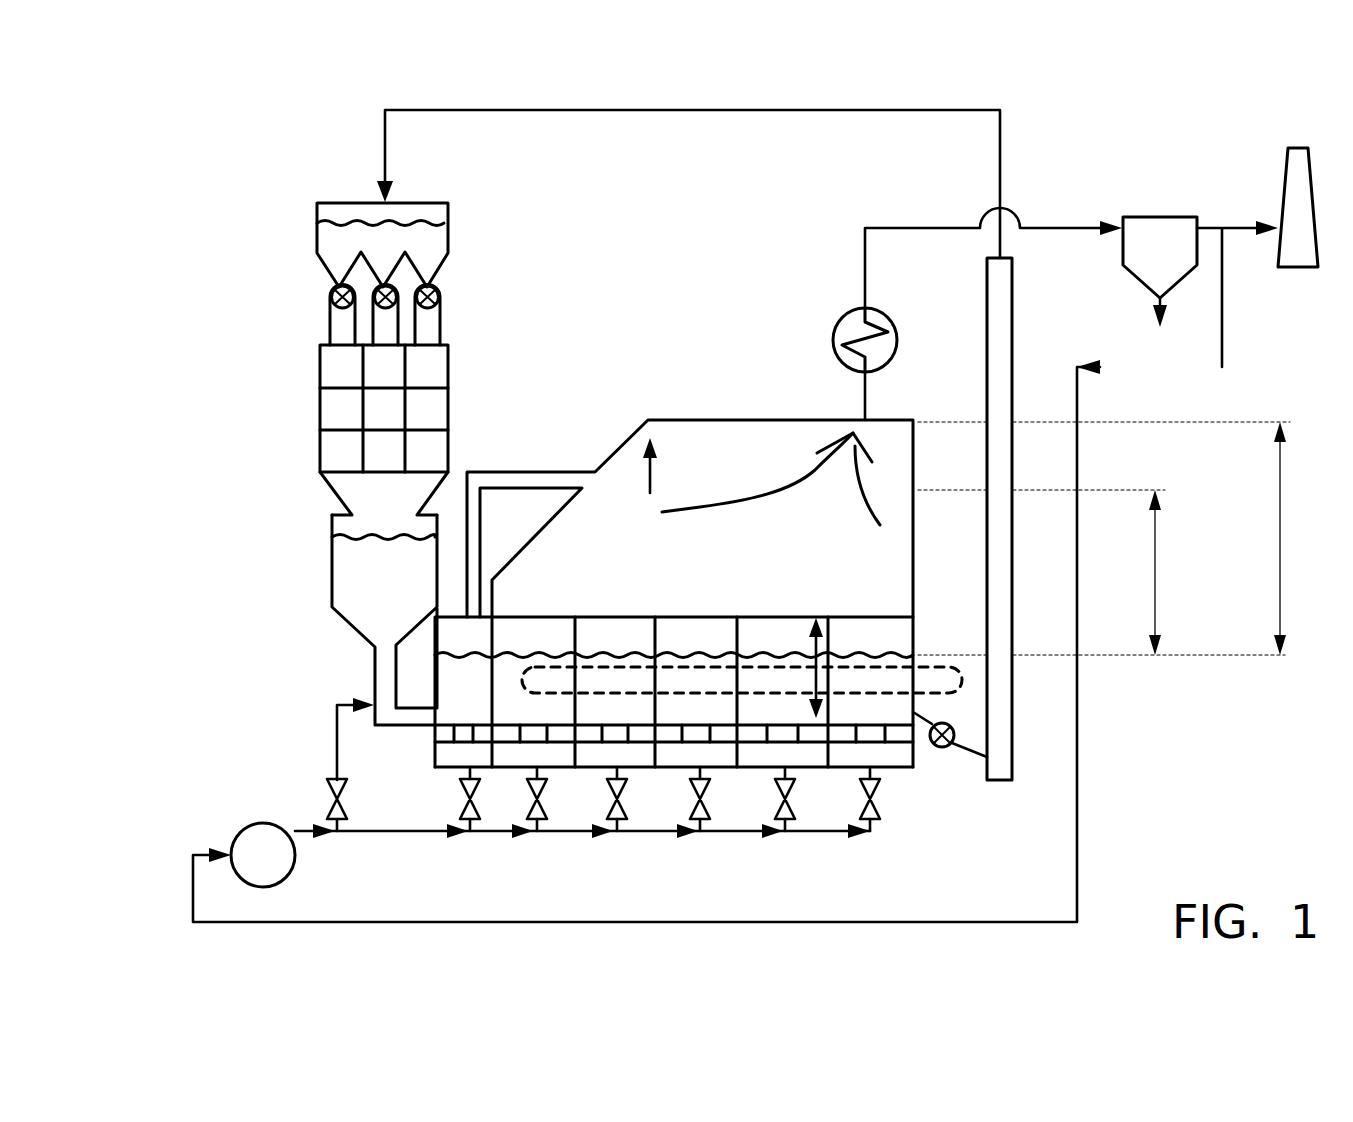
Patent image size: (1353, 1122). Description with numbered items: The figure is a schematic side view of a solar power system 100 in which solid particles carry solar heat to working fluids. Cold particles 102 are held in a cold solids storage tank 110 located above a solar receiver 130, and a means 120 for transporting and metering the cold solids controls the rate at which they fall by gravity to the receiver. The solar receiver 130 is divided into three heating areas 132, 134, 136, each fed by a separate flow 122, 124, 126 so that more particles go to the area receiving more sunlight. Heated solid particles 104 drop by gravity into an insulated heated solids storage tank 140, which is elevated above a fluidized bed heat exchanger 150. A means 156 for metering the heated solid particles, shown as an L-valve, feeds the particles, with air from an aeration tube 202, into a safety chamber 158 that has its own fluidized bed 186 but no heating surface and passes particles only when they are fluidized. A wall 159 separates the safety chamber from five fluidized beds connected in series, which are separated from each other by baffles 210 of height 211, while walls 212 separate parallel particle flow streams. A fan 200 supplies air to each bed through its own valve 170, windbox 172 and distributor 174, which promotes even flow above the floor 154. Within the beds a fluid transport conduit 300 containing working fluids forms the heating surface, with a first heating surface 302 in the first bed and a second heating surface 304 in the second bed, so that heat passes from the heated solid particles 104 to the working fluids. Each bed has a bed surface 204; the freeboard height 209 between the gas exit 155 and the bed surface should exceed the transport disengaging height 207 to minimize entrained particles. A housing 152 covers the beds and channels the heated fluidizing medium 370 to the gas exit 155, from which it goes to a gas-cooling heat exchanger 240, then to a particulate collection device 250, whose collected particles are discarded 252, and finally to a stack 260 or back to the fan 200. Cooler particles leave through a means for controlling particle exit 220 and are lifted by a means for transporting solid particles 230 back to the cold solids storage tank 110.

The solar power system 100 is at (308, 87).
The cold particles 102 is at (342, 253).
The heated solid particles 104 is at (355, 585).
The cold solids storage tank 110 is at (367, 201).
The means for transporting and metering the cold solids 120 is at (330, 298).
The flow 122 is at (343, 337).
The flow 124 is at (385, 323).
The flow 126 is at (427, 328).
The solar receiver 130 is at (323, 375).
The heating area 132 is at (340, 413).
The heating area 134 is at (377, 453).
The heating area 136 is at (427, 412).
The heated solids storage tank 140 is at (337, 515).
The fluidized bed heat exchanger 150 is at (620, 443).
The housing 152 is at (700, 420).
The floor 154 is at (873, 755).
The gas exit 155 is at (830, 403).
The means for metering the heated solid particles 156 is at (387, 680).
The safety chamber 158 is at (458, 633).
The wall 159 is at (495, 640).
The valve 170 is at (612, 801).
The windbox 172 is at (897, 750).
The distributor 174 is at (693, 732).
The fluidized bed 186 is at (467, 705).
The fan 200 is at (237, 837).
The aeration tube 202 is at (333, 740).
The bed surface 204 is at (757, 653).
The transport disengaging height 207 is at (1157, 585).
The freeboard height 209 is at (1278, 450).
The baffles 210 is at (832, 628).
The height 211 is at (813, 670).
The walls 212 is at (797, 628).
The means for controlling particle exit 220 is at (947, 752).
The means for transporting solid particles 230 is at (998, 367).
The gas-cooling heat exchanger 240 is at (842, 317).
The particulate collection device 250 is at (1187, 265).
The discarded particles 252 is at (1169, 328).
The stack 260 is at (1300, 198).
The fluid transport conduit 300 is at (938, 667).
The first heating surface 302 is at (562, 683).
The second heating surface 304 is at (640, 680).
The heated fluidizing medium 370 is at (880, 485).